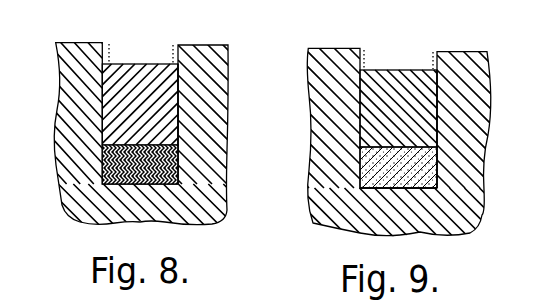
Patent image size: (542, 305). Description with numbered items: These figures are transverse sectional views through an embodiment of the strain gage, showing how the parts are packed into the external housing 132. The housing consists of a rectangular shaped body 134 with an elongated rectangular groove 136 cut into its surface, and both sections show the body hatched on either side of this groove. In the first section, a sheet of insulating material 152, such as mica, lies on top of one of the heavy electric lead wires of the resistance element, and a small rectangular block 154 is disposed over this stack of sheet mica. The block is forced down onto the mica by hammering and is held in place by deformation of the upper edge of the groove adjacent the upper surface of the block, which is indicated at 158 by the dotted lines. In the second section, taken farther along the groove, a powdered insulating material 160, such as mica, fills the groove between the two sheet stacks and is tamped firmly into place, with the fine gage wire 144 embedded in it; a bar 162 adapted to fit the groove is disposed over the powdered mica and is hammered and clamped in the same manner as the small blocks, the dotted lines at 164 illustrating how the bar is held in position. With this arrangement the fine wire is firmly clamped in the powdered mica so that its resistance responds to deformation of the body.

In FIG. 8, the external housing 132 is at (228, 95).
In FIG. 9, the external housing 132 is at (310, 117).
In FIG. 8, the rectangular shaped body 134 is at (58, 115).
In FIG. 9, the rectangular shaped body 134 is at (484, 169).
In FIG. 8, the elongated rectangular groove 136 is at (177, 112).
In FIG. 9, the elongated rectangular groove 136 is at (437, 110).
In FIG. 9, the fine gage wire 144 is at (387, 176).
In FIG. 8, the sheet of insulating material 152 is at (145, 140).
In FIG. 8, the small rectangular block 154 is at (137, 64).
In FIG. 8, the deformation of the upper edge of the groove 158 is at (112, 42).
In FIG. 9, the powdered insulating material 160 is at (360, 163).
In FIG. 9, the bar 162 is at (395, 70).
In FIG. 9, the dotted lines showing bar retention 164 is at (370, 50).